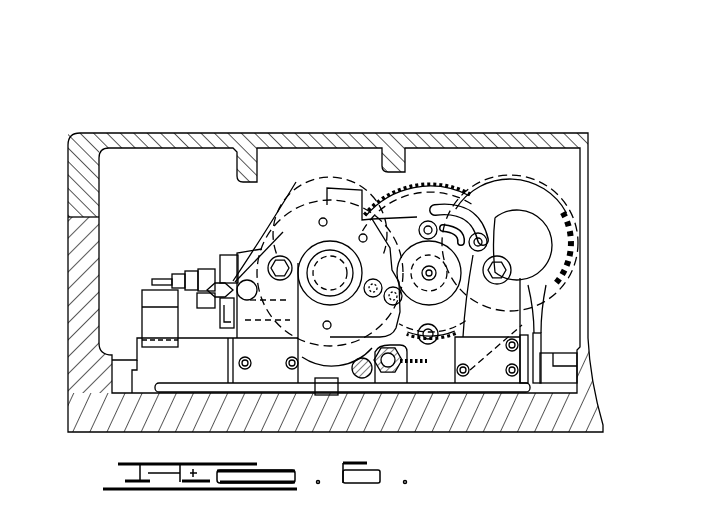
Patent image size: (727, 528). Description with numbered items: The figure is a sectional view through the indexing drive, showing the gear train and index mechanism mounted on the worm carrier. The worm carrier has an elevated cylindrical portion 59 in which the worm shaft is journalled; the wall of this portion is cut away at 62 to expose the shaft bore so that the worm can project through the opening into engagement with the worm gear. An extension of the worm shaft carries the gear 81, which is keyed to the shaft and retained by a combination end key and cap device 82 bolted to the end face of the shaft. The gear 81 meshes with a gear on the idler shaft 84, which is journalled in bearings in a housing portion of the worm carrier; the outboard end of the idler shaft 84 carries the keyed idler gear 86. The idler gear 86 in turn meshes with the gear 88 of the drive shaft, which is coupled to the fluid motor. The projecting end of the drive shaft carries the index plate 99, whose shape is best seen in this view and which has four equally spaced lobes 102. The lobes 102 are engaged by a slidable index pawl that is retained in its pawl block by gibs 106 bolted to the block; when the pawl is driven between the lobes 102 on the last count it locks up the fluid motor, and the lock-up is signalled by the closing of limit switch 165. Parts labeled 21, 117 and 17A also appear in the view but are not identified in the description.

The housing 21 is at (527, 413).
The limit switch 165 is at (180, 280).
The gibs 106 is at (208, 241).
The pivot nut 117 is at (263, 257).
The index plate 99 is at (264, 229).
The gear 88 is at (330, 261).
The lobes 102 is at (330, 188).
The idler shaft 84 is at (408, 323).
The idler gear 86 is at (427, 185).
The gear 81 is at (543, 168).
The cut-away opening 62 is at (568, 276).
The combination end key and cap device 82 is at (530, 222).
The hex nut 17A is at (512, 272).
The cylindrical portion 59 is at (540, 303).